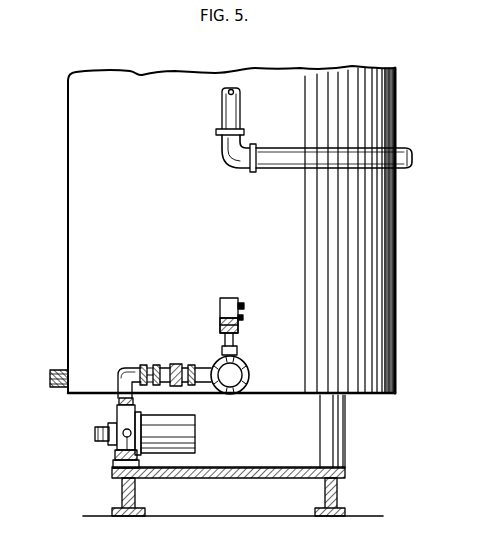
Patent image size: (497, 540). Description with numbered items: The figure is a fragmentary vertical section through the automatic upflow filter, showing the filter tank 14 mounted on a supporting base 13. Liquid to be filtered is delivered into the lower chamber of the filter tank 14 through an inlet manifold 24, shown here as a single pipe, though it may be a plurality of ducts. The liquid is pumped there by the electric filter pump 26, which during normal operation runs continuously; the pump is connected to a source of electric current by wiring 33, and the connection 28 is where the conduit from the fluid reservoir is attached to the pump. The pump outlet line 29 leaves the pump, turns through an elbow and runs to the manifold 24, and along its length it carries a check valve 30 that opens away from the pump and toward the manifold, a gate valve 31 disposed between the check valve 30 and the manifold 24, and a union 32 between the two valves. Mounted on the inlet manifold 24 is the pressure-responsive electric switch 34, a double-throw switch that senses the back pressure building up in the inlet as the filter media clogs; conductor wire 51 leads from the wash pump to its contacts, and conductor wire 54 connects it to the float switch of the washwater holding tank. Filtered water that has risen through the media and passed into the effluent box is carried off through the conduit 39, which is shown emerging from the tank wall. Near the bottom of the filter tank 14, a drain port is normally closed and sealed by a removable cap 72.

The supporting base 13 is at (247, 467).
The filter tank 14 is at (81, 253).
The inlet manifold 24 is at (248, 380).
The filter pump 26 is at (200, 437).
The connection 28 is at (95, 433).
The pump outlet line 29 is at (121, 370).
The check valve 30 is at (157, 367).
The gate valve 31 is at (197, 367).
The union 32 is at (178, 364).
The wiring 33 is at (112, 452).
The pressure-responsive electric switch 34 is at (228, 298).
The conduit 39 is at (305, 169).
The conductor wire 51 is at (244, 306).
The conductor wire 54 is at (244, 318).
The removable cap 72 is at (48, 384).